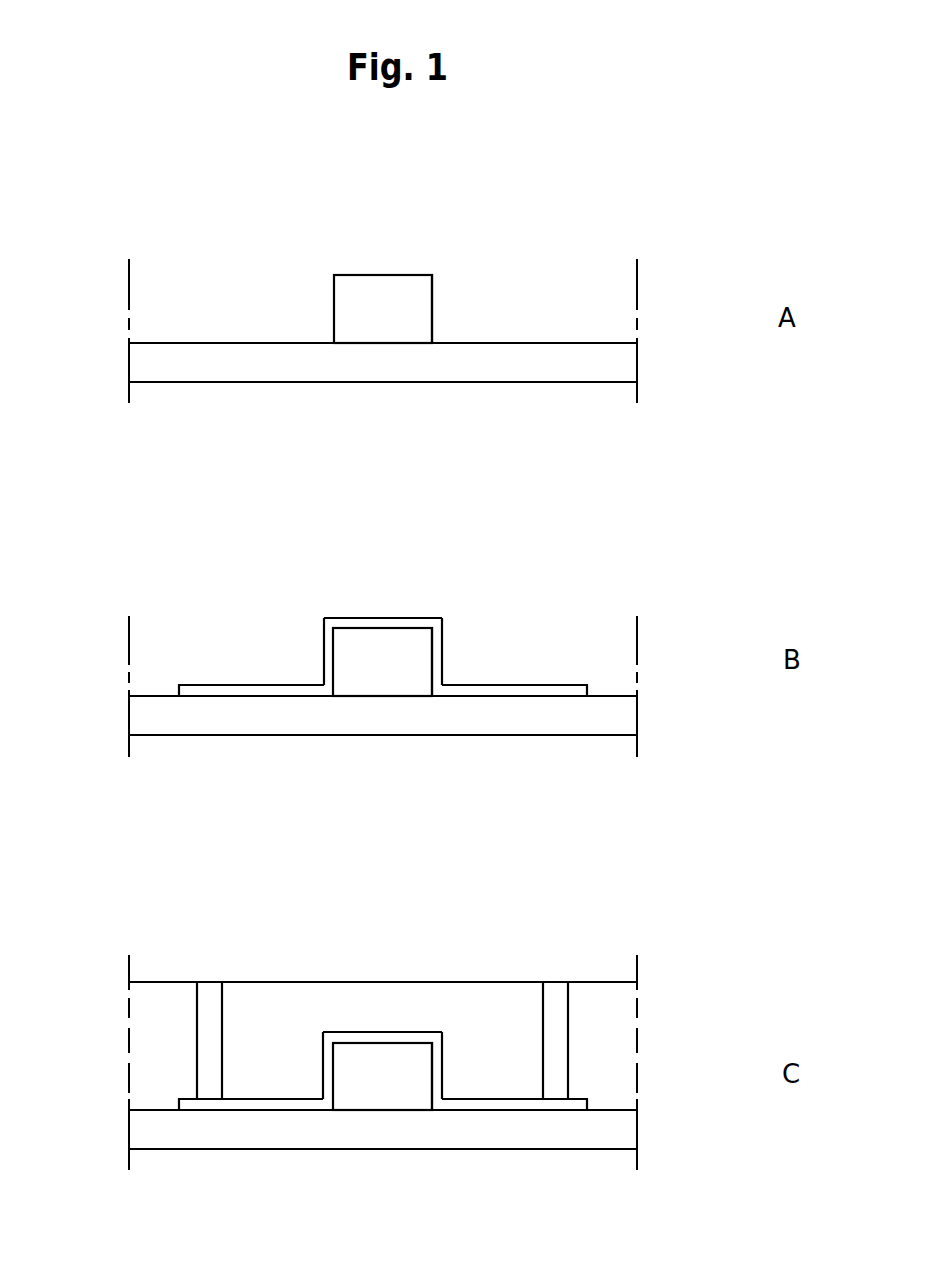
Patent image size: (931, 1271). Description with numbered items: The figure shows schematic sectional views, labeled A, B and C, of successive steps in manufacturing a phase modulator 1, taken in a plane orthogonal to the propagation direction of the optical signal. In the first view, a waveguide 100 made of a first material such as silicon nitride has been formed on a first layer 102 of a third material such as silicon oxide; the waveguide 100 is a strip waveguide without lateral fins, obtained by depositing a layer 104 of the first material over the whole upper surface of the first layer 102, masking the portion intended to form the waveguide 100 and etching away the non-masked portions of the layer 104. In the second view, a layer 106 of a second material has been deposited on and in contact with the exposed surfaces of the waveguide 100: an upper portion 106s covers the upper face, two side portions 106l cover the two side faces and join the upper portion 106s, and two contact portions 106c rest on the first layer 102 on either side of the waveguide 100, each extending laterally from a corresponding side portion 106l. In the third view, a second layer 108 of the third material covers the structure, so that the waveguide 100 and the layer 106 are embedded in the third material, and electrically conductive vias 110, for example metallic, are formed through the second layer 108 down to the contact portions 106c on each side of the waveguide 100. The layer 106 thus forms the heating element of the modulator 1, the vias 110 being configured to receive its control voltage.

The phase modulator 1 is at (387, 1029).
The waveguide 100 is at (382, 692).
The first layer 102 is at (623, 363).
The layer 104 is at (448, 290).
The layer 106 is at (444, 870).
The contact portions 106c is at (227, 690).
The side portions 106l is at (330, 639).
The upper portion 106s is at (383, 623).
The second layer 108 is at (617, 1013).
The vias 110 is at (207, 980).